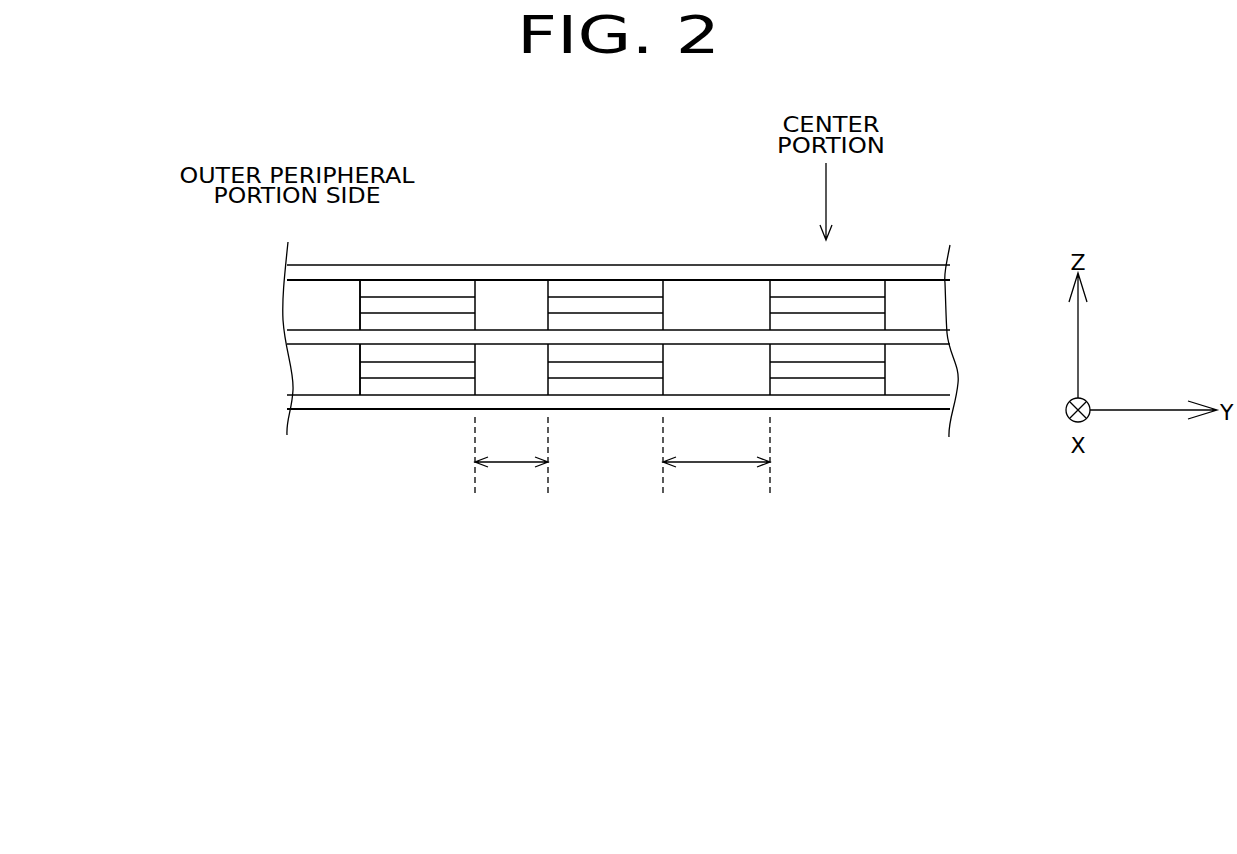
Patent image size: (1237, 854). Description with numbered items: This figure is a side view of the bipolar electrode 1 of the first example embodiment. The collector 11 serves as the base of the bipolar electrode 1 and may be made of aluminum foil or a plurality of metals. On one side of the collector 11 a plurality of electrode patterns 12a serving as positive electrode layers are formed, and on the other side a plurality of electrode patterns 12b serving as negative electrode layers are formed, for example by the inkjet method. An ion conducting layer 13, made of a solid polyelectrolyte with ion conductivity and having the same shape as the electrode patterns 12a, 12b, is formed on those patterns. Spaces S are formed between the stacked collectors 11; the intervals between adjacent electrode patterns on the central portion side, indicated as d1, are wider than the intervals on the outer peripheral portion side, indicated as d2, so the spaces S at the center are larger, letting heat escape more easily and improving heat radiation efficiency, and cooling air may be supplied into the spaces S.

The bipolar electrode 1 is at (170, 273).
The collector 11 is at (302, 337).
The electrode pattern 12a is at (368, 321).
The electrode pattern 12b is at (368, 353).
The ion conducting layer 13 is at (368, 305).
The space S is at (513, 290).
The gap width at center portion d1 is at (716, 464).
The gap width at outer peripheral side d2 is at (511, 464).